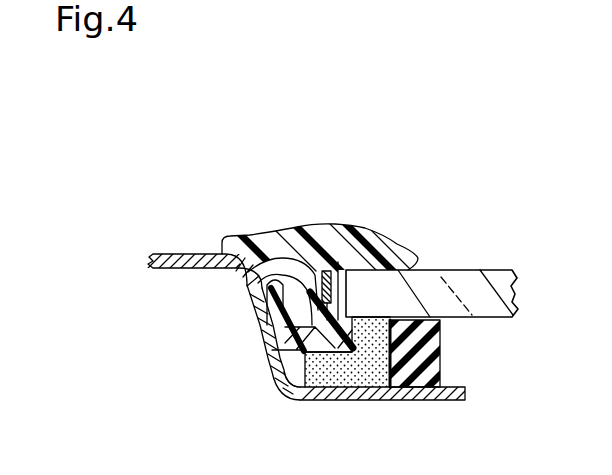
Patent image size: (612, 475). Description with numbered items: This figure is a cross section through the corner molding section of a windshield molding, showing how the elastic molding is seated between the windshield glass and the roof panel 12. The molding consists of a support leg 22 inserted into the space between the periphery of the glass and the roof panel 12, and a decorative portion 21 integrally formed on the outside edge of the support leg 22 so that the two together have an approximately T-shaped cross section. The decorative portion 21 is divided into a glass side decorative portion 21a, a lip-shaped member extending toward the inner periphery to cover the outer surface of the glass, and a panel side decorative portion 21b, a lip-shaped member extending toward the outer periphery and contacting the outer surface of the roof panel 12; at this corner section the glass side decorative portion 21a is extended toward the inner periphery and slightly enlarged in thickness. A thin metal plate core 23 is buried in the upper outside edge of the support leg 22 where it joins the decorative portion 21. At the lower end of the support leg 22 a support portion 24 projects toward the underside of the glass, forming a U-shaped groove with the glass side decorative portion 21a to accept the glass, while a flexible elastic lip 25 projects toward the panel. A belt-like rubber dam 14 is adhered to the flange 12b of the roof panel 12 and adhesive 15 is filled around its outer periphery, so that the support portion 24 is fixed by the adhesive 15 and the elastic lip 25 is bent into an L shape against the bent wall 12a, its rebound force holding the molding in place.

The roof panel 12 is at (173, 253).
The bent wall 12a is at (258, 355).
The flange 12b is at (423, 394).
The rubber dam 14 is at (432, 356).
The adhesive 15 is at (366, 358).
The decorative portion 21 is at (311, 223).
The glass side decorative portion 21a is at (378, 235).
The panel side decorative portion 21b is at (281, 253).
The support leg 22 is at (283, 369).
The metal plate core 23 is at (256, 275).
The support portion 24 is at (343, 342).
The elastic lip 25 is at (259, 311).